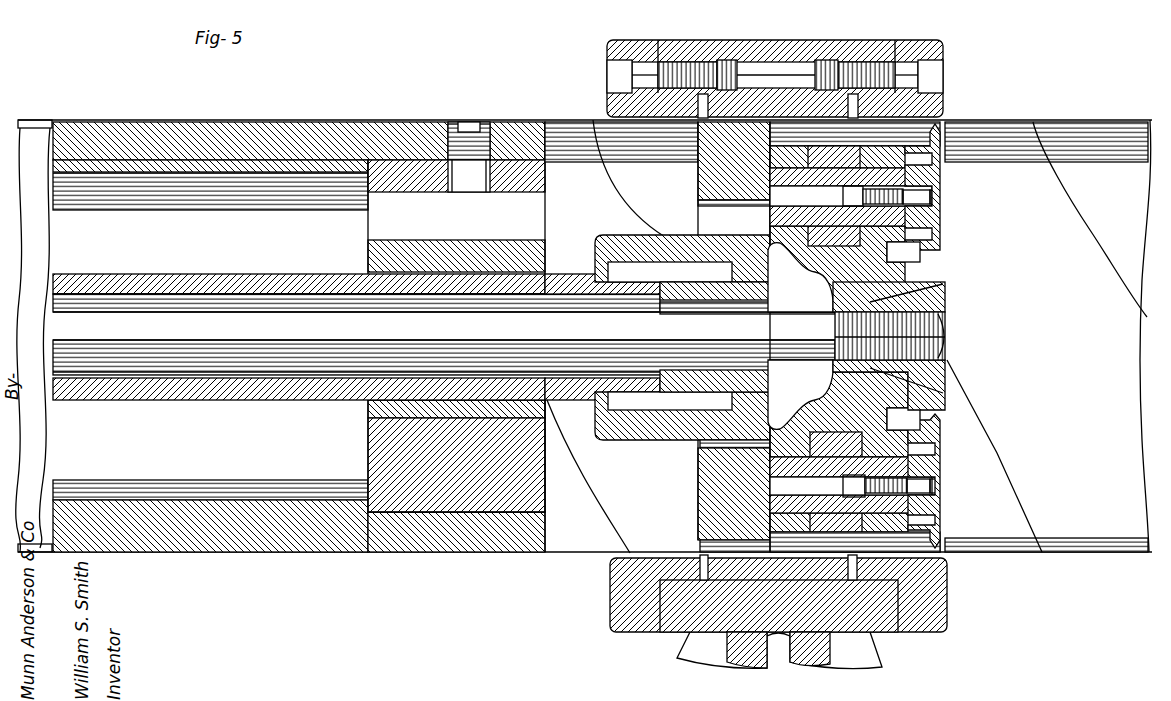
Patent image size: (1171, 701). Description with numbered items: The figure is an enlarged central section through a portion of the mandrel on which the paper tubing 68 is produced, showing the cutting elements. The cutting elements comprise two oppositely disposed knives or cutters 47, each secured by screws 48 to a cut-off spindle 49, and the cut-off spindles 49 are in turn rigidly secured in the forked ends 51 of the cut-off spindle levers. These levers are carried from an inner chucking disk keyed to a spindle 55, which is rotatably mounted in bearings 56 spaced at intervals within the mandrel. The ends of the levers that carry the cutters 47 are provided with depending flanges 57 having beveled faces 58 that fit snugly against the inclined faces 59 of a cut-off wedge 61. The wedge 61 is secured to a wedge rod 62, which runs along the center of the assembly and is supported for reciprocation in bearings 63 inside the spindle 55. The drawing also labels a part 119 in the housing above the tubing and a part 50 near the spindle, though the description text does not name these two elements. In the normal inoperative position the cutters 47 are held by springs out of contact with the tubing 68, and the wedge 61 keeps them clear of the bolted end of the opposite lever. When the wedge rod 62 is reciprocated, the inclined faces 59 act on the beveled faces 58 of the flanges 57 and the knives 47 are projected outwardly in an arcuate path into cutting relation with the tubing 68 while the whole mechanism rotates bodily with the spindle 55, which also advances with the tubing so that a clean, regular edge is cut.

The spring housing 119 is at (866, 52).
The forked ends 51 is at (886, 152).
The paper tubing 68 is at (1122, 121).
The screws 48 is at (928, 195).
The cut-off spindles 49 is at (926, 213).
The knives or cutters 47 is at (932, 235).
The depending flanges 57 is at (903, 336).
The inclined faces 59 is at (920, 280).
The cut-off wedge 61 is at (930, 303).
The beveled faces 58 is at (832, 303).
The wedge rod 62 is at (243, 312).
The spindle 55 is at (566, 280).
The ring 50 is at (666, 245).
The bearings 56 is at (368, 412).
The bearings 63 is at (688, 377).